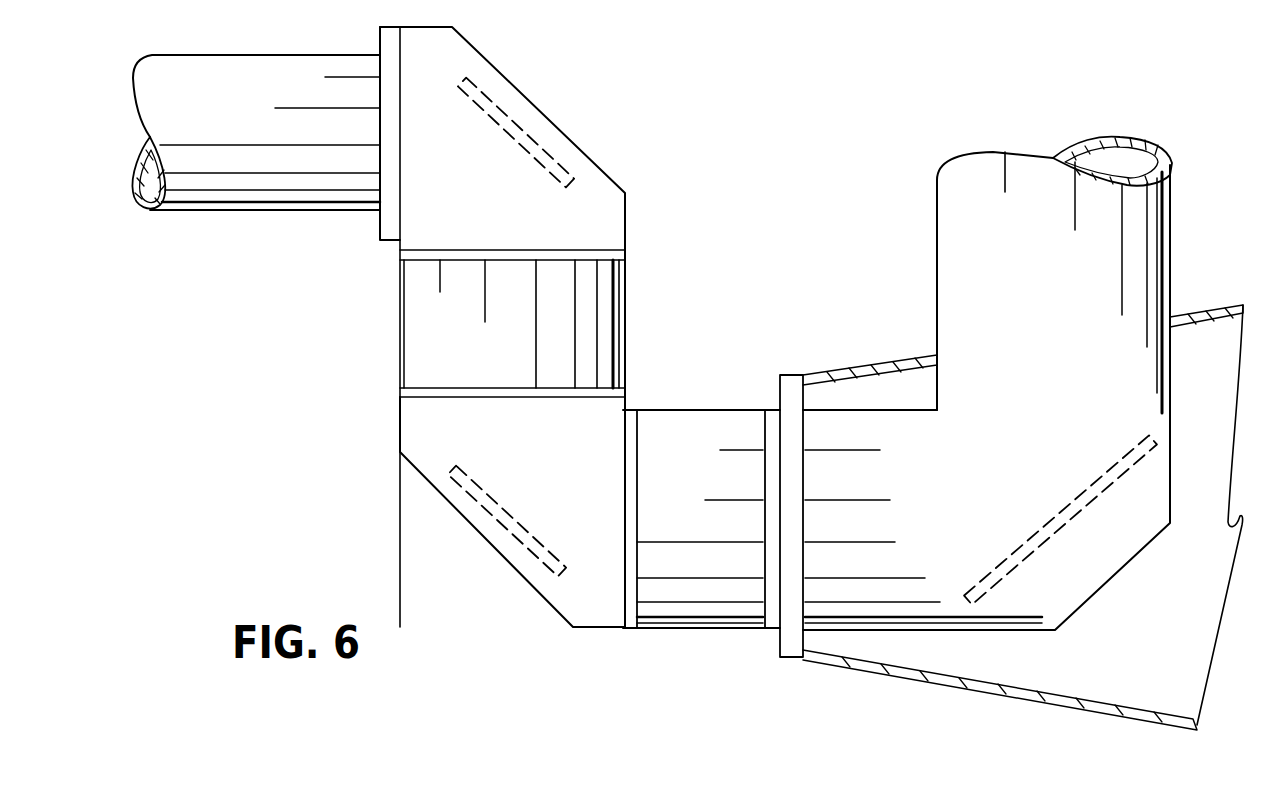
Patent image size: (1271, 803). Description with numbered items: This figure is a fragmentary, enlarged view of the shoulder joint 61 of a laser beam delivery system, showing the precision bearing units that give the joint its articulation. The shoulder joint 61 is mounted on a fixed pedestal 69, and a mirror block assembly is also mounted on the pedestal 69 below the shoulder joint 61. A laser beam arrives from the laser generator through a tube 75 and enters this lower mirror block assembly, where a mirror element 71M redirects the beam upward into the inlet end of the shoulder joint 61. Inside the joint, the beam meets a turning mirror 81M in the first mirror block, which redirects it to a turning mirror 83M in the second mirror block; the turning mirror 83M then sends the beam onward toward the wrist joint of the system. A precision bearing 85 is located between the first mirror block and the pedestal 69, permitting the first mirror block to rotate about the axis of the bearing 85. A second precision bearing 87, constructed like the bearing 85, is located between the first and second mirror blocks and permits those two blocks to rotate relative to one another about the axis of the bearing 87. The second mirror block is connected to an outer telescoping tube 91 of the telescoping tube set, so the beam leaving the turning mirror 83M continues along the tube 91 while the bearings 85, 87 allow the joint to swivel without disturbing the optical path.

The shoulder joint 61 is at (855, 122).
The fixed pedestal 69 is at (882, 362).
The mirror element 71M is at (1033, 562).
The tube 75 is at (1172, 215).
The turning mirror 81M is at (500, 522).
The turning mirror 83M is at (530, 133).
The precision bearing 85 is at (688, 410).
The precision bearing 87 is at (400, 307).
The outer telescoping tube 91 is at (260, 212).